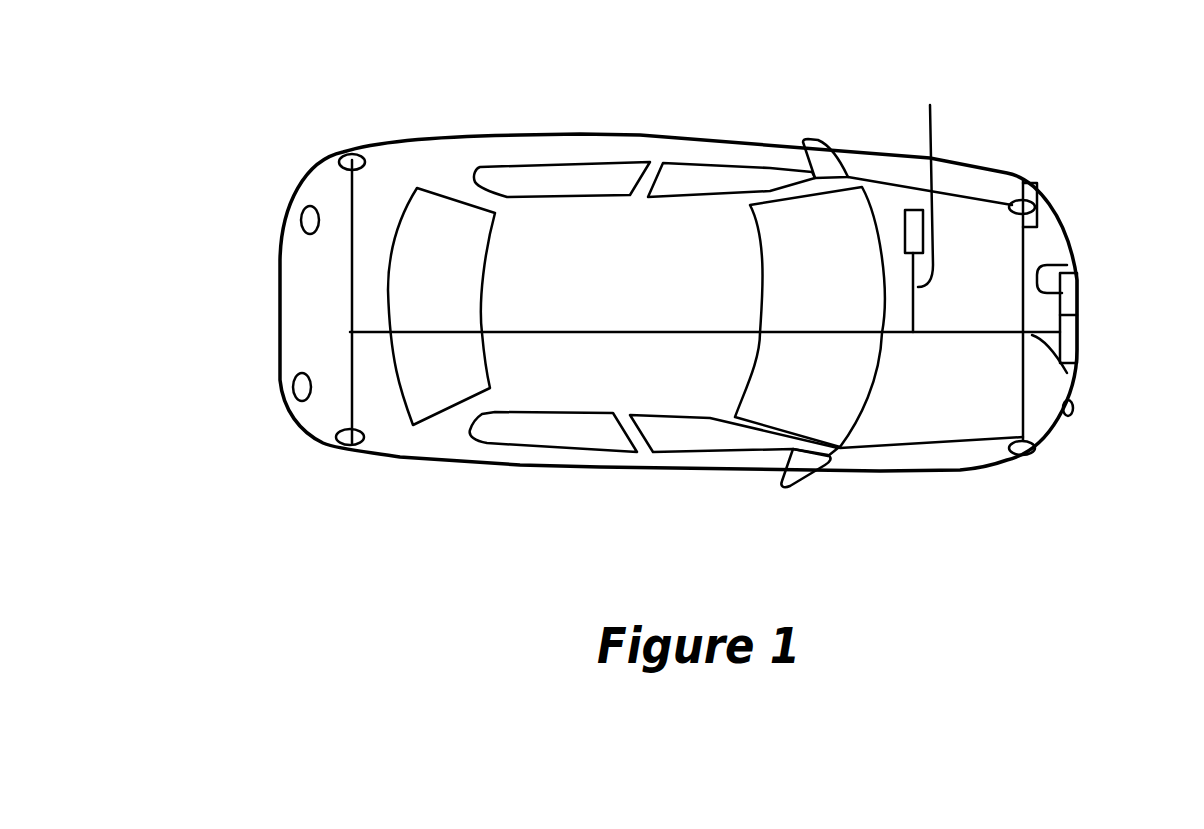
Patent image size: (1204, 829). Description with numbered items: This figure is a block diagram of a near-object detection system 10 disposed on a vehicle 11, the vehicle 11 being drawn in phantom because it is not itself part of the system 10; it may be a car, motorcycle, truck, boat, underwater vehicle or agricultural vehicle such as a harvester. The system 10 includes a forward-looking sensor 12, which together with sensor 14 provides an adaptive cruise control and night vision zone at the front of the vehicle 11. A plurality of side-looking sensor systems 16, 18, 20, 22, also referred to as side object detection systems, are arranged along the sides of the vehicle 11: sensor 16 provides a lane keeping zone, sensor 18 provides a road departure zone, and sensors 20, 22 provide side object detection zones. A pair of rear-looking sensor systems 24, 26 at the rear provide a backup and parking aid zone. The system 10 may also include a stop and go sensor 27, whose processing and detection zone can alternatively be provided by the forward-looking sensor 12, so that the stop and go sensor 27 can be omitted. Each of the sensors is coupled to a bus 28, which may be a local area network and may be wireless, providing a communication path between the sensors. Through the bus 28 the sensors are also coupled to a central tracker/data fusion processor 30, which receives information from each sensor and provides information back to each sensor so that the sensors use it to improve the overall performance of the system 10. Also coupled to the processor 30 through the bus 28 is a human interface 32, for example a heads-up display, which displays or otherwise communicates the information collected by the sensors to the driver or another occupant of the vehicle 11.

The near-object detection system 10 is at (724, 259).
The vehicle 11 is at (557, 135).
The forward-looking sensor 12 is at (1077, 303).
The sensor 14 is at (1077, 350).
The side-looking sensor system 16 is at (1015, 200).
The side-looking sensor system 18 is at (1024, 455).
The side-looking sensor system 20 is at (347, 447).
The side-looking sensor system 22 is at (355, 158).
The rear-looking sensor system 24 is at (350, 388).
The rear-looking sensor system 26 is at (350, 220).
The stop and go sensor 27 is at (1070, 417).
The bus 28 is at (335, 218).
The central tracker/data fusion processor 30 is at (1038, 220).
The human interface 32 is at (907, 210).